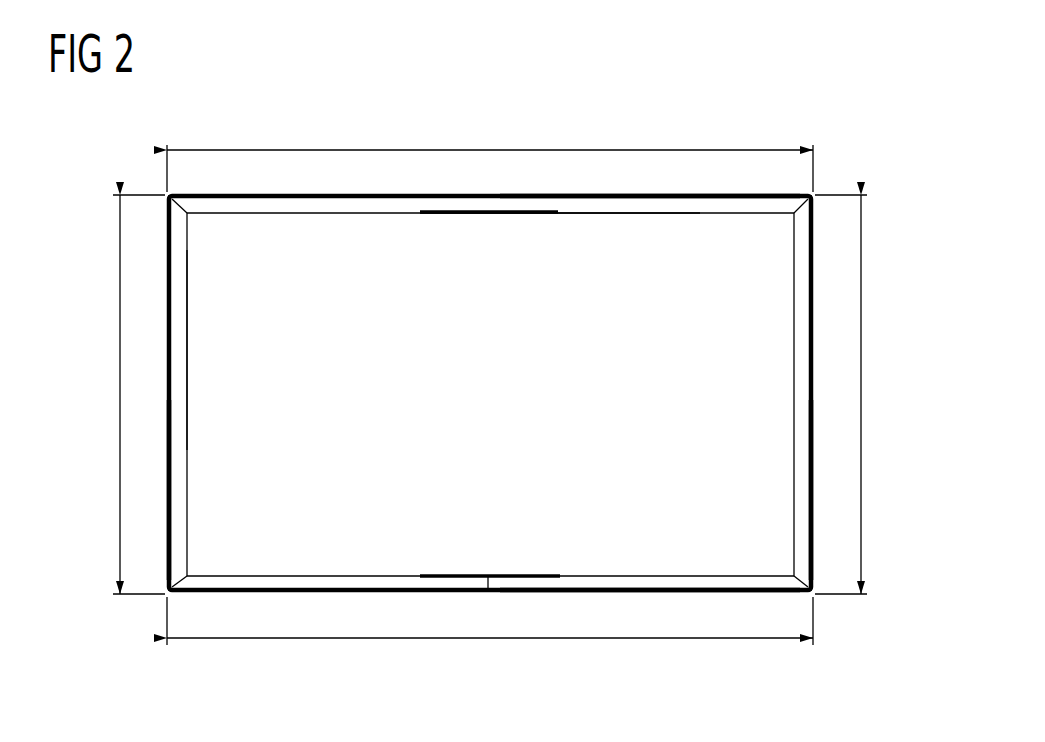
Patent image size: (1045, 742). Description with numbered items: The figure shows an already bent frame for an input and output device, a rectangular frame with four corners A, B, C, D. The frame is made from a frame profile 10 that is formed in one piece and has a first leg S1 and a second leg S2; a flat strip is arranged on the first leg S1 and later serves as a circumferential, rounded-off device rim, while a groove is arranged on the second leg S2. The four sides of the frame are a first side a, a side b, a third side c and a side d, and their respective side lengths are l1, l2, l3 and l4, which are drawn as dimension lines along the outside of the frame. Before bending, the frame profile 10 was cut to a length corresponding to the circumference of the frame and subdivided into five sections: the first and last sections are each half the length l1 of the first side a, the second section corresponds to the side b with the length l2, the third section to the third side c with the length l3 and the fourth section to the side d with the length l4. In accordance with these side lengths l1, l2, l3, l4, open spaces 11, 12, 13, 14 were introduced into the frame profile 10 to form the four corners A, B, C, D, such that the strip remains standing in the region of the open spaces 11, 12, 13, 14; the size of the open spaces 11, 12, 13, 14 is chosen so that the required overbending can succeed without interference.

The frame profile 10 is at (770, 118).
The open space 11 is at (187, 575).
The open space 12 is at (794, 575).
The open space 13 is at (794, 215).
The open space 14 is at (187, 215).
The first leg S1 is at (585, 204).
The second leg S2 is at (181, 359).
The first side a is at (638, 594).
The second side b is at (815, 518).
The third side c is at (638, 193).
The fourth side d is at (165, 522).
The corner A is at (168, 593).
The corner B is at (812, 593).
The corner C is at (812, 194).
The corner D is at (168, 194).
The side length l1 is at (494, 639).
The side length l2 is at (861, 393).
The side length l3 is at (487, 150).
The side length l4 is at (120, 393).